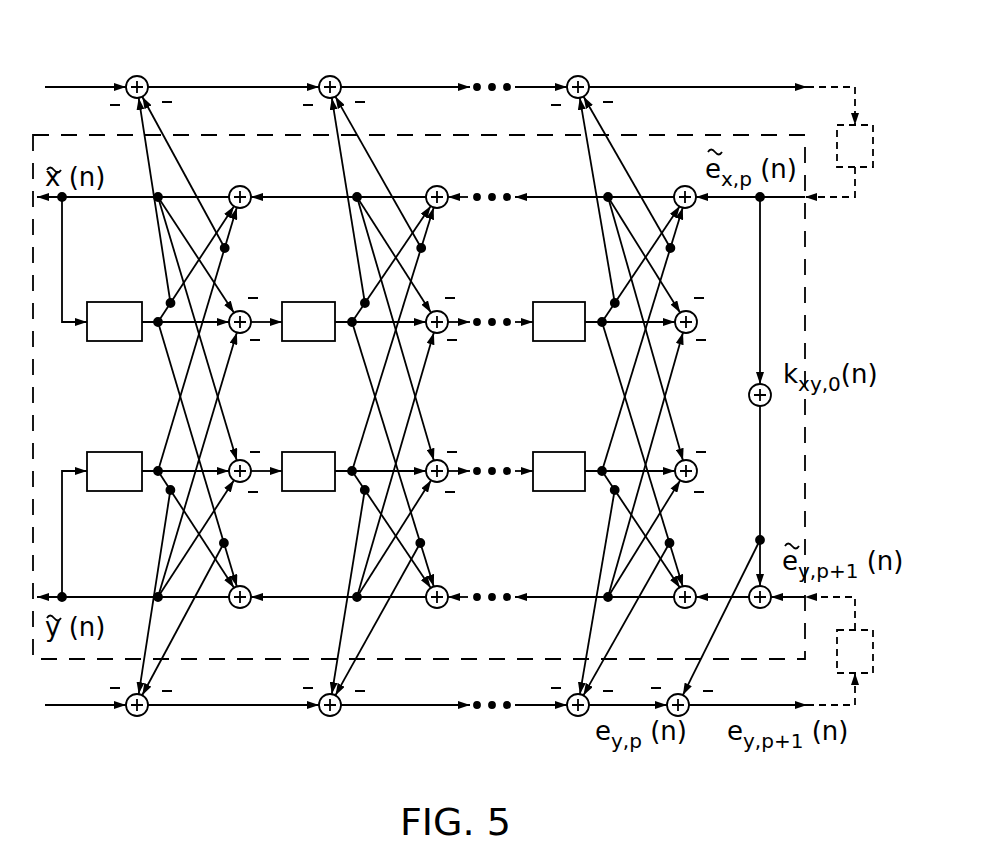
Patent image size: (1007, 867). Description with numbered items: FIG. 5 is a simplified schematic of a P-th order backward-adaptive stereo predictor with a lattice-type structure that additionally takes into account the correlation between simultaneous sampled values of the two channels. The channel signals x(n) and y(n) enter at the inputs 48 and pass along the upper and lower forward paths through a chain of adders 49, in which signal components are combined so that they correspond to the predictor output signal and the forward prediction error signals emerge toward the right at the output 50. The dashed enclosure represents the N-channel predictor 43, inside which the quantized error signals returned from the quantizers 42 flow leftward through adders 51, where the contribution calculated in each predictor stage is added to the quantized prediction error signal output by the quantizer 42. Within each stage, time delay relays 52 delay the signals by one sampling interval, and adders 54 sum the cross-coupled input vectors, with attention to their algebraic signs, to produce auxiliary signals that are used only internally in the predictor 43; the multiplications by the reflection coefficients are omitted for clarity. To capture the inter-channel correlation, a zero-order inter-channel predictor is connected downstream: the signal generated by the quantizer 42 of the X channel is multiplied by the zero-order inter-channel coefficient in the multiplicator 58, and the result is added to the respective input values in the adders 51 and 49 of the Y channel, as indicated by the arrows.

The quantizer 42 is at (871, 168).
The N-channel predictor 43 is at (777, 285).
The input 48 is at (48, 87).
The adder 49 is at (146, 79).
The forward error output 50 is at (697, 87).
The adder 51 is at (250, 190).
The time delay relay 52 is at (115, 341).
The adder 54 is at (247, 333).
The multiplicator 58 is at (763, 406).